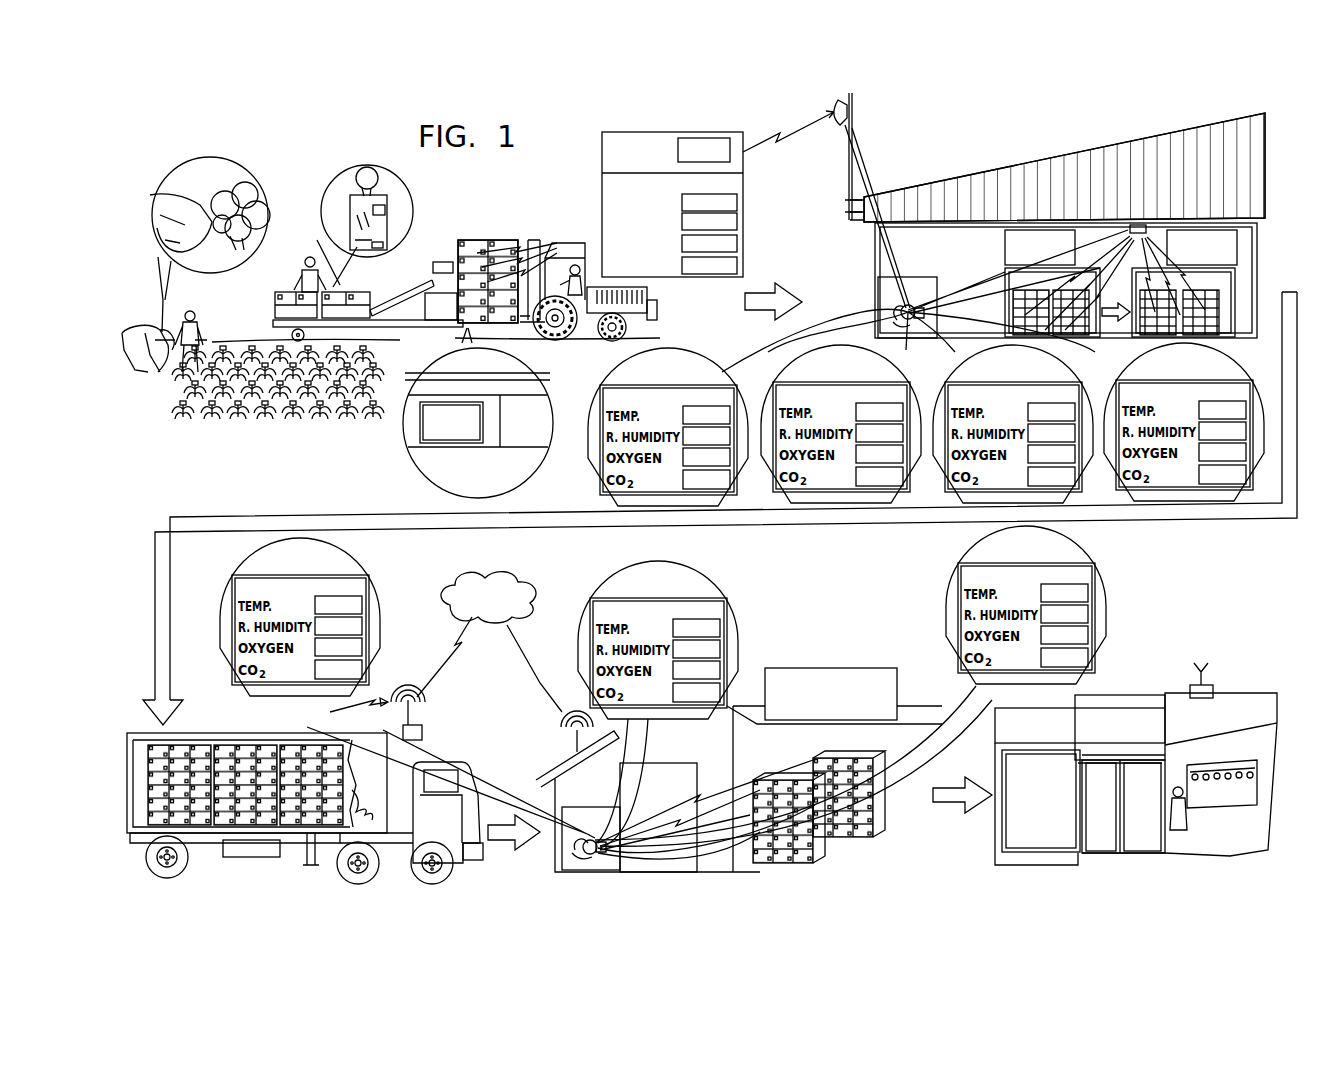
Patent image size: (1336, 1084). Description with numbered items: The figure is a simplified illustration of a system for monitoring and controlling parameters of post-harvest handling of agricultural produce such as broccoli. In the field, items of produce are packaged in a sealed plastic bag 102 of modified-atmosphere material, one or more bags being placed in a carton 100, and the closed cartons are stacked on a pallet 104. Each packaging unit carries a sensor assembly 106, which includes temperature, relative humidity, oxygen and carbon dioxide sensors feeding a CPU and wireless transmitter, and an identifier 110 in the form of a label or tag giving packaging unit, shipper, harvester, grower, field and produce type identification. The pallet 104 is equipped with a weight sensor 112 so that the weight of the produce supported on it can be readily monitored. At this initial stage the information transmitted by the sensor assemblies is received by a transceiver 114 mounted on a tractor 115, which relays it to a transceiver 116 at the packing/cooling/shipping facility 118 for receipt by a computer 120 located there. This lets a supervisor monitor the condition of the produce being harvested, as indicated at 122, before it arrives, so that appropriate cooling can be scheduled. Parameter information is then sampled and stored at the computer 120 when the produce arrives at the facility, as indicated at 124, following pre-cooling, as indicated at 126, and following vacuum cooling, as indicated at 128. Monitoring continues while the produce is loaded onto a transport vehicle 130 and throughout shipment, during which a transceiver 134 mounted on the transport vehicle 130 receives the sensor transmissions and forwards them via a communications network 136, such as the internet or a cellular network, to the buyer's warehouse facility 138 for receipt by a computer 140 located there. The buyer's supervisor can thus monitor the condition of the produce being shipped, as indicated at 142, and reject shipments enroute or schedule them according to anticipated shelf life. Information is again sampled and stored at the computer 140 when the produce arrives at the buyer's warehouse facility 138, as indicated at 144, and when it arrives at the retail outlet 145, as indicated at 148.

The carton 100 is at (456, 252).
The sealed plastic bag 102 is at (400, 224).
The pallet 104 is at (496, 458).
The sensor assembly 106 is at (350, 228).
The identifier 110 is at (387, 200).
The weight sensor 112 is at (458, 330).
The transceiver 114 is at (562, 247).
The tractor 115 is at (585, 330).
The transceiver 116 is at (855, 108).
The packing/cooling/shipping facility 118 is at (980, 172).
The computer 120 is at (909, 306).
The condition of produce being harvested 122 is at (592, 476).
The parameter information on arrival 124 is at (807, 507).
The parameter information following pre-cooling 126 is at (963, 507).
The parameter information following vacuum cooling 128 is at (1172, 505).
The transport vehicle 130 is at (255, 832).
The transceiver 134 is at (410, 687).
The communications network 136 is at (498, 576).
The buyer's warehouse facility 138 is at (750, 668).
The computer 140 is at (585, 818).
The condition of produce being shipped 142 is at (380, 590).
The parameter information on arrival at buyer's warehouse 144 is at (603, 588).
The retail outlet 145 is at (1242, 693).
The parameter information on arrival at retail outlet 148 is at (1107, 610).